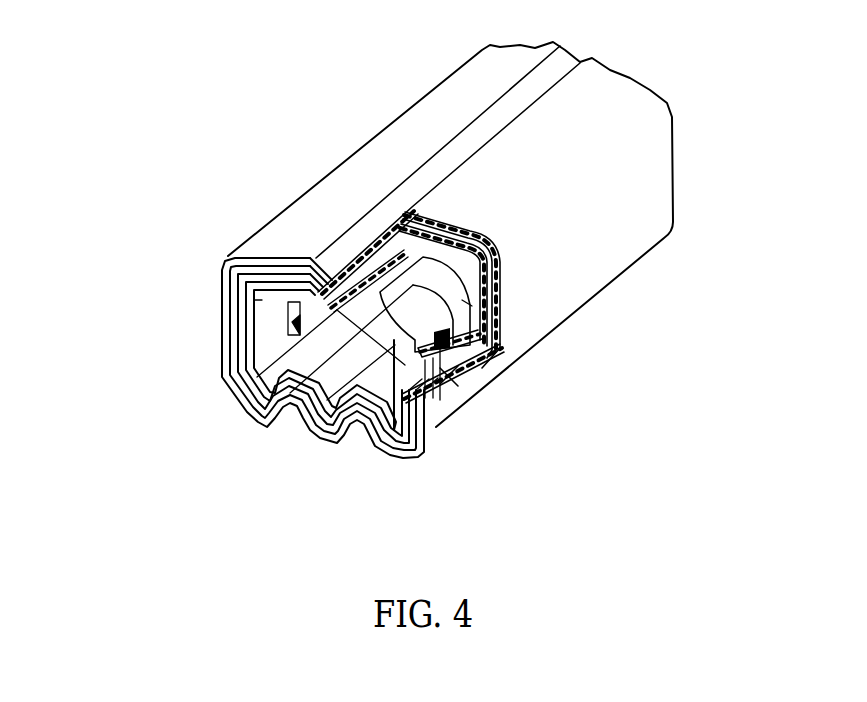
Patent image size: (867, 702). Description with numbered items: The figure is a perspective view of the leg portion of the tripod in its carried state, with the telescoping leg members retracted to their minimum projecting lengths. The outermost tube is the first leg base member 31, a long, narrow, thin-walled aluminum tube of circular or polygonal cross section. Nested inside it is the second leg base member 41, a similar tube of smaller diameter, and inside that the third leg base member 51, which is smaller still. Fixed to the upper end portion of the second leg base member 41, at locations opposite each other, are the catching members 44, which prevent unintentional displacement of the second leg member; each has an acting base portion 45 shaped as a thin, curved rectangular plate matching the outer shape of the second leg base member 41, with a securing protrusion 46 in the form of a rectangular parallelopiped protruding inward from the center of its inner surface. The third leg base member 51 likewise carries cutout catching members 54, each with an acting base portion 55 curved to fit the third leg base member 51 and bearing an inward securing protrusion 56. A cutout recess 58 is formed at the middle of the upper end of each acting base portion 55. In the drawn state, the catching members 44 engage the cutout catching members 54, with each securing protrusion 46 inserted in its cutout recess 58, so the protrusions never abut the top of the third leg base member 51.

The first leg base member 31 is at (252, 423).
The second leg base member 41 is at (271, 426).
The catching member 44 is at (440, 370).
The acting base portion 45 is at (452, 410).
The securing protrusion 46 is at (440, 357).
The third leg base member 51 is at (360, 298).
The cutout catching member 54 is at (298, 310).
The acting base portion 55 is at (414, 280).
The securing protrusion 56 is at (292, 322).
The cutout recess 58 is at (442, 303).